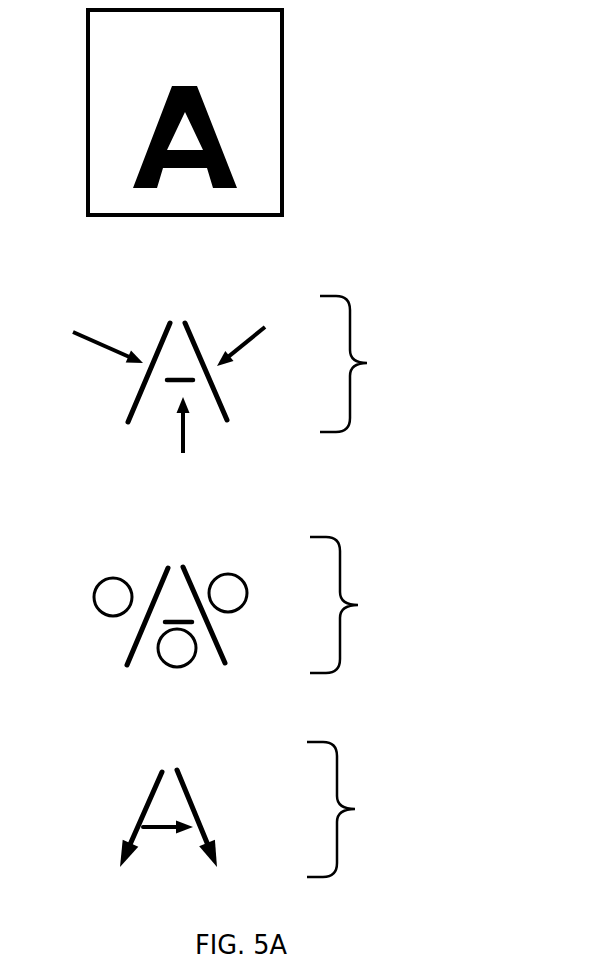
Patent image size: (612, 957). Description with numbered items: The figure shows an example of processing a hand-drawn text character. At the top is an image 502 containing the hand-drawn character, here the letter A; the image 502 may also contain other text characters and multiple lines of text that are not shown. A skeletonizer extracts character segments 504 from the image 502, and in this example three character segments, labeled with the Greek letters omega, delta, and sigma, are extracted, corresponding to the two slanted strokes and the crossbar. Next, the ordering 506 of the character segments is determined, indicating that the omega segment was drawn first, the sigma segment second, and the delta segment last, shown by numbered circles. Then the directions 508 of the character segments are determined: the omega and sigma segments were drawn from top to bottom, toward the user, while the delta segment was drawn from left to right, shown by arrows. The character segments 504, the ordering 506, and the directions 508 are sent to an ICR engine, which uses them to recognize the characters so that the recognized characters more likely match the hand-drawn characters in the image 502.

The image 502 is at (168, 68).
The character segments 504 is at (267, 391).
The ordering 506 is at (287, 605).
The directions 508 is at (301, 809).